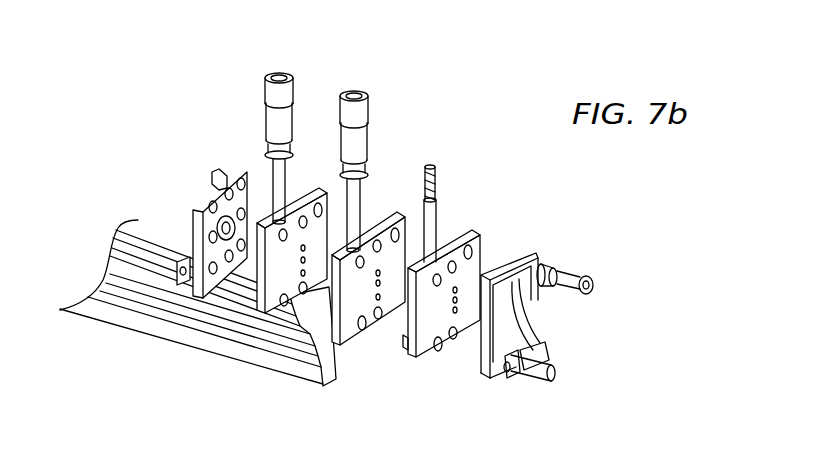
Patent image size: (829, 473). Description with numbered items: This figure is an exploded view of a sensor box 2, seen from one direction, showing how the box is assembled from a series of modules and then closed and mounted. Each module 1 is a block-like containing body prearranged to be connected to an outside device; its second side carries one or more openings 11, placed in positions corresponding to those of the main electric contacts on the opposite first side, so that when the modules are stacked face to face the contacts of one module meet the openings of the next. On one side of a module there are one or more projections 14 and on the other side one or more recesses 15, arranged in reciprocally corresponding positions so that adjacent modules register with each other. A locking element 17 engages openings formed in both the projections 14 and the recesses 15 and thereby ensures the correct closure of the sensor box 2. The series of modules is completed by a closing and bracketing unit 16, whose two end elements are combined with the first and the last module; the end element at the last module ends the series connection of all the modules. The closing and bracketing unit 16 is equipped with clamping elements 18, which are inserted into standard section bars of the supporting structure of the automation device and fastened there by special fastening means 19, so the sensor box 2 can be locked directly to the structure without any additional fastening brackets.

The module 1 is at (396, 183).
The sensor box 2 is at (189, 106).
The opening 11 is at (302, 235).
The projection 14 is at (403, 338).
The recess 15 is at (440, 362).
The closing and bracketing unit 16 is at (192, 218).
The locking element 17 is at (593, 285).
The clamping element 18 is at (506, 378).
The fastening means 19 is at (547, 340).